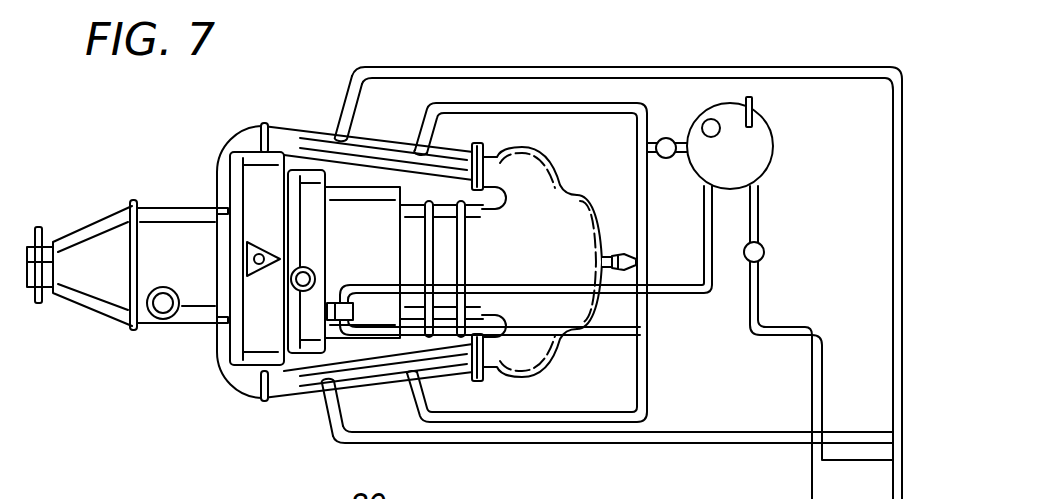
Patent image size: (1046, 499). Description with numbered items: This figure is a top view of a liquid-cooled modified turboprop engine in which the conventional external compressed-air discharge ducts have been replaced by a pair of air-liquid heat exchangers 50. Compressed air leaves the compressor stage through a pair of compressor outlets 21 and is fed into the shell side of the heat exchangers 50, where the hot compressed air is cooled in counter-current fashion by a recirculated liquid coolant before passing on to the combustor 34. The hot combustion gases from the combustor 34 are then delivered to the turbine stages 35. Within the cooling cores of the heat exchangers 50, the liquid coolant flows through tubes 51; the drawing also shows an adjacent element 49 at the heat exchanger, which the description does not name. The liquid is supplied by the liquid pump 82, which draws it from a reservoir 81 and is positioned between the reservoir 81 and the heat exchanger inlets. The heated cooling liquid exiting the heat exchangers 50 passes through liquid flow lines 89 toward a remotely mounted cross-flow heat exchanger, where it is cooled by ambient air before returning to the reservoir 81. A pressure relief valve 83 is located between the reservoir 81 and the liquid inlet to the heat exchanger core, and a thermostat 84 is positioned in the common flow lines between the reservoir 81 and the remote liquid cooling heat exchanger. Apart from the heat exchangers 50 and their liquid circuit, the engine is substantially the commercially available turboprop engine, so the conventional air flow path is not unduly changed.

The compressor outlet 21 is at (216, 156).
The combustor 34 is at (579, 195).
The turbine stages 35 is at (480, 255).
The tube 49 is at (290, 127).
The air-liquid heat exchanger 50 is at (324, 118).
The tubes 51 is at (450, 140).
The reservoir 81 is at (788, 156).
The liquid pump 82 is at (330, 312).
The pressure relief valve 83 is at (668, 128).
The thermostat 84 is at (782, 252).
The liquid flow lines 89 is at (487, 68).